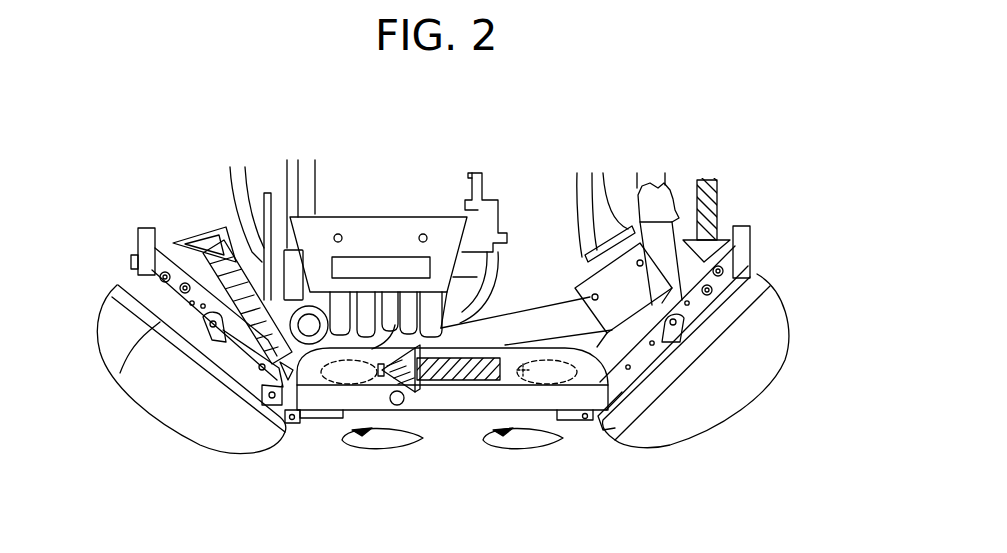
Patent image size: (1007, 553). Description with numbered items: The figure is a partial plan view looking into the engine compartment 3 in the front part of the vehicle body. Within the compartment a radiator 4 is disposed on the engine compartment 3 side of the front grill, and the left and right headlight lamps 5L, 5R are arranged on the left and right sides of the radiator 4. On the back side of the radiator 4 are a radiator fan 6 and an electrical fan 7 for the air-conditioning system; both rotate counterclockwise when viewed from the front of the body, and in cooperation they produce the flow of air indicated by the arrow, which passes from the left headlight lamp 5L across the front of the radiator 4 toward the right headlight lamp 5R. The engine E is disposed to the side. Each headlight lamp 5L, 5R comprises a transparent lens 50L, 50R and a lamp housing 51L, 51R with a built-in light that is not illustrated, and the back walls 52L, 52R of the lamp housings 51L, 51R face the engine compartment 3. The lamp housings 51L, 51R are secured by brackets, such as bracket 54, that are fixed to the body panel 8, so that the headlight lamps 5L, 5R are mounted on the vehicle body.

The engine compartment 3 is at (540, 207).
The engine E is at (380, 233).
The radiator 4 is at (455, 412).
The radiator fan 6 is at (335, 382).
The electrical fan 7 is at (565, 382).
The right headlight lamp 5R is at (147, 405).
The left headlight lamp 5L is at (759, 391).
The transparent lens 50R is at (120, 373).
The transparent lens 50L is at (762, 357).
The lamp housing 51R is at (125, 283).
The lamp housing 51L is at (755, 278).
The back wall 52R is at (163, 244).
The back wall 52L is at (692, 295).
The bracket 54 is at (213, 336).
The body panel 8 is at (247, 360).